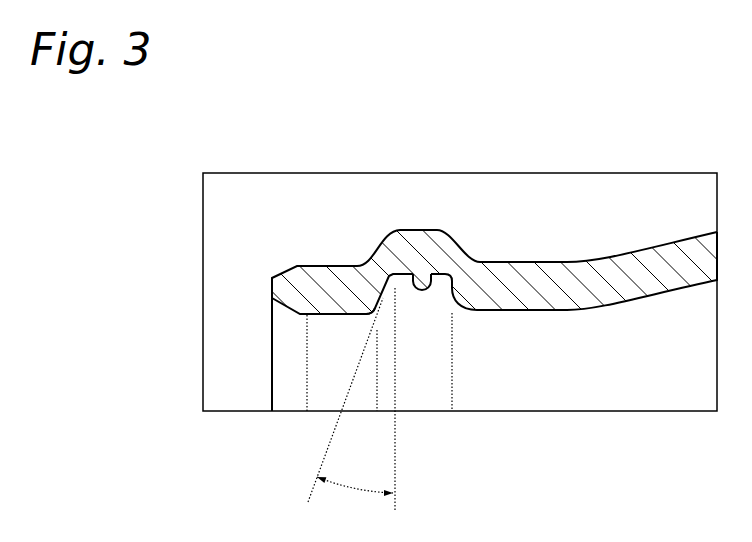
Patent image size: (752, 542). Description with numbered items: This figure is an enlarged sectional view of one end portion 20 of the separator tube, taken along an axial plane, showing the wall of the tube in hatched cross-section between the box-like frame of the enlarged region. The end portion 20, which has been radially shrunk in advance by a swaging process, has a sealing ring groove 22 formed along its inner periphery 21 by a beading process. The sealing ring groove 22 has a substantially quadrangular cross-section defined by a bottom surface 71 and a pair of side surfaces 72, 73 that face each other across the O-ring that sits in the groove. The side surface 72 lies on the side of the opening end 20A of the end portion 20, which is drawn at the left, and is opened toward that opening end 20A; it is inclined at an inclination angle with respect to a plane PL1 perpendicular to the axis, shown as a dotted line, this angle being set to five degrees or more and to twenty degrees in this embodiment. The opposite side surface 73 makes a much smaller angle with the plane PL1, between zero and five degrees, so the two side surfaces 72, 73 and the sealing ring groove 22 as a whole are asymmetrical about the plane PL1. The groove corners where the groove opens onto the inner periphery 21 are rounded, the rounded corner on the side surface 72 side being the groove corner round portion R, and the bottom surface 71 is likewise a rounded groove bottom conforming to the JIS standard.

The end portion of the separator tube 20 is at (307, 264).
The opening end 20A is at (272, 331).
The inner periphery 21 is at (525, 312).
The sealing ring groove 22 is at (423, 298).
The bottom surface 71 is at (441, 273).
The side surface 72 is at (388, 294).
The side surface 73 is at (462, 245).
The groove corner round portion R is at (372, 305).
The plane perpendicular to the axis PL1 is at (397, 478).